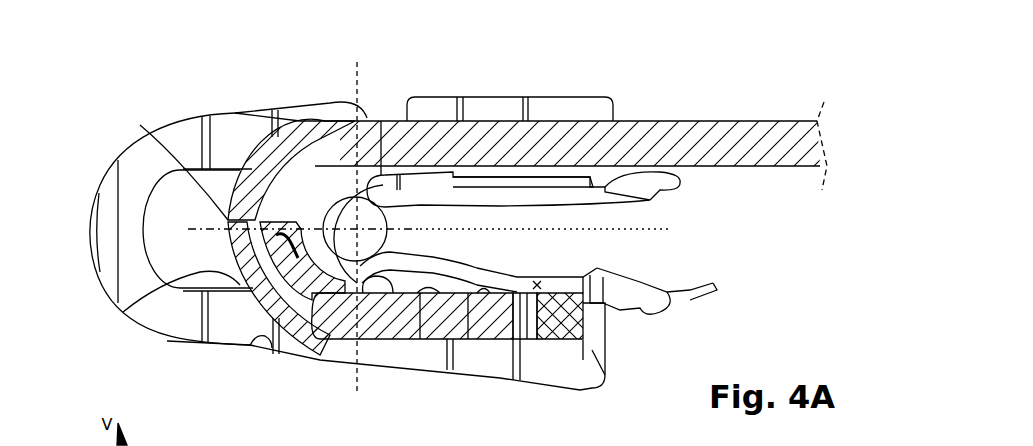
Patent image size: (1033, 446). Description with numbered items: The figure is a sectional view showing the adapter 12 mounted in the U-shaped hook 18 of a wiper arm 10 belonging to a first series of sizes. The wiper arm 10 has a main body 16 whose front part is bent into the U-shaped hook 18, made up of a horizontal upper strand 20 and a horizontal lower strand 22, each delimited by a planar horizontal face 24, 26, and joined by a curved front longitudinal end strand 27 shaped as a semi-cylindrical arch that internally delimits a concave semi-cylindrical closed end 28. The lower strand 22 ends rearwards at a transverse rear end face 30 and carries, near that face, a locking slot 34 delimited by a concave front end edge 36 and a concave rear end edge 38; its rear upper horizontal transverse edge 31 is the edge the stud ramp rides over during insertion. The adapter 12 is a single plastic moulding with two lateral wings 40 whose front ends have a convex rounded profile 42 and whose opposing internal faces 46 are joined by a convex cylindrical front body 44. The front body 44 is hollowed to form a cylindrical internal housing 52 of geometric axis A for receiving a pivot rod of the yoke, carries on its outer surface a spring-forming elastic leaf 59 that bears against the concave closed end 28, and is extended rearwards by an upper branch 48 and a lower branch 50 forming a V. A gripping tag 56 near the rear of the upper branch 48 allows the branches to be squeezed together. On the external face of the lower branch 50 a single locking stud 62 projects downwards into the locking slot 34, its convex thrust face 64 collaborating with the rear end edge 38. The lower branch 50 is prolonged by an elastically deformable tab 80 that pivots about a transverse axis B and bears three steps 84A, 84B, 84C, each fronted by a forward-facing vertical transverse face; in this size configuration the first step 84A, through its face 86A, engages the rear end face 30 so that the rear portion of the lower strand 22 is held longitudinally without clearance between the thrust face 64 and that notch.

The wiper arm 10 is at (713, 85).
The adapter 12 is at (262, 345).
The main body 16 is at (780, 147).
The U-shaped hook 18 is at (133, 317).
The upper strand 20 is at (428, 121).
The lower strand 22 is at (355, 375).
The planar horizontal face 24 is at (572, 178).
The planar horizontal face 26 is at (403, 345).
The curved front longitudinal end strand 27 is at (258, 188).
The concave semi-cylindrical closed end 28 is at (163, 330).
The rear end face 30 is at (607, 313).
The rear upper horizontal transverse edge 31 is at (583, 272).
The locking slot 34 is at (490, 340).
The front end edge 36 is at (470, 372).
The rear end edge 38 is at (548, 345).
The lateral wings 40 is at (513, 93).
The convex rounded profile 42 is at (110, 220).
The front body 44 is at (330, 121).
The internal faces 46 is at (297, 112).
The upper branch 48 is at (477, 121).
The lower branch 50 is at (487, 275).
The internal housing 52 is at (303, 345).
The gripping tag 56 is at (672, 121).
The spring-forming elastic leaf 59 is at (147, 127).
The locking stud 62 is at (515, 355).
The thrust face 64 is at (565, 360).
The elastically deformable tab 80 is at (713, 287).
The first step 84A is at (600, 293).
The second step 84B is at (640, 277).
The third step 84C is at (677, 313).
The vertical transverse face 86A is at (585, 325).
The geometric axis A is at (381, 121).
The transversely oriented axis B is at (527, 288).